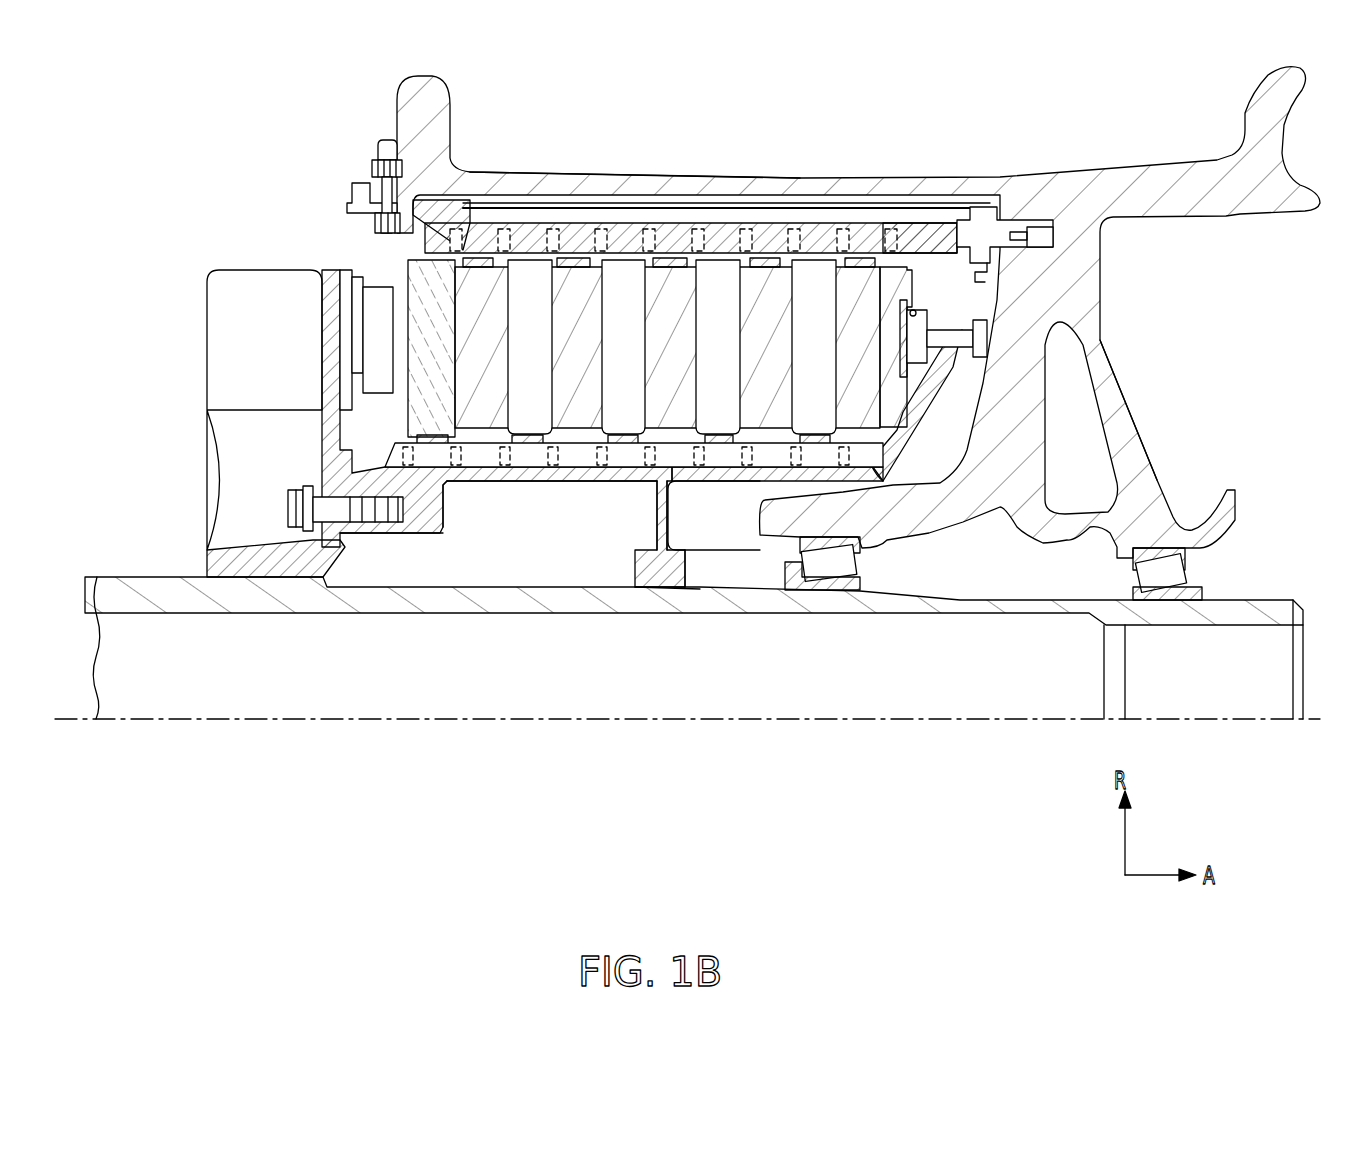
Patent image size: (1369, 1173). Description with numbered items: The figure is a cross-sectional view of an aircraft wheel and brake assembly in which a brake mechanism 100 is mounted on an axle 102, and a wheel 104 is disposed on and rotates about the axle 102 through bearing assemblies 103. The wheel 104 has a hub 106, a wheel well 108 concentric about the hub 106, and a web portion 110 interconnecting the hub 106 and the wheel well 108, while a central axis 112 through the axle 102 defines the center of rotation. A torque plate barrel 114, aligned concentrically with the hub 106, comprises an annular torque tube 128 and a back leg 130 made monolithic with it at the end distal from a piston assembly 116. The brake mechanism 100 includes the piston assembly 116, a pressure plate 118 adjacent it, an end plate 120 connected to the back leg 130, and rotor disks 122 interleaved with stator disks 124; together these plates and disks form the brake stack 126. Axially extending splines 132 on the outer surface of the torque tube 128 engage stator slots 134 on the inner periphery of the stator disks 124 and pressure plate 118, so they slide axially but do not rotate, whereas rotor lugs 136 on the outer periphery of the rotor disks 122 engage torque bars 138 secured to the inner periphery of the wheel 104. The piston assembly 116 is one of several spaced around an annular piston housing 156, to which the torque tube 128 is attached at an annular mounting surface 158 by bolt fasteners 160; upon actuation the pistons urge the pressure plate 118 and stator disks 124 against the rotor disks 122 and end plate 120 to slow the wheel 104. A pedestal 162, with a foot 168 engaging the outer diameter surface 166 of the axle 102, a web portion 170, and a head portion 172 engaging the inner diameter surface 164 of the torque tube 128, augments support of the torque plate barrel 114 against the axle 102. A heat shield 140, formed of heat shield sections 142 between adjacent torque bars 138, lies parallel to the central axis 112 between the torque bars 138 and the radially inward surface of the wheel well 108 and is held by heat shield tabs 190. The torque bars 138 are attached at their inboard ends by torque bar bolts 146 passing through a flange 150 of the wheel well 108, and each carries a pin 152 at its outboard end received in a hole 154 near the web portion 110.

The brake mechanism 100 is at (202, 141).
The axle 102 is at (975, 620).
The bearing assemblies 103 is at (1173, 570).
The wheel 104 is at (1128, 323).
The hub 106 is at (838, 518).
The wheel well 108 is at (1000, 178).
The web portion 110 is at (1123, 400).
The central axis 112 is at (931, 723).
The torque plate barrel 114 is at (509, 498).
The piston assembly 116 is at (285, 248).
The pressure plate 118 is at (410, 267).
The end plate 120 is at (903, 280).
The rotor disks 122 is at (485, 273).
The stator disks 124 is at (624, 268).
The brake stack 126 is at (819, 265).
The torque tube 128 is at (466, 491).
The back leg 130 is at (817, 405).
The splines 132 is at (384, 461).
The stator slots 134 is at (787, 470).
The rotor lugs 136 is at (506, 245).
The torque bars 138 is at (920, 242).
The heat shield 140 is at (669, 206).
The heat shield sections 142 is at (773, 270).
The torque bar bolts 146 is at (388, 140).
The flange 150 is at (361, 187).
The pin 152 is at (1003, 229).
The hole 154 is at (1040, 232).
The annular piston housing 156 is at (207, 275).
The annular mounting surface 158 is at (397, 536).
The bolt fasteners 160 is at (293, 511).
The pedestal 162 is at (644, 517).
The inner diameter surface 164 is at (546, 483).
The outer diameter surface 166 is at (696, 582).
The foot 168 is at (692, 552).
The web portion 170 is at (653, 553).
The head portion 172 is at (662, 489).
The heat shield tabs 190 is at (962, 327).